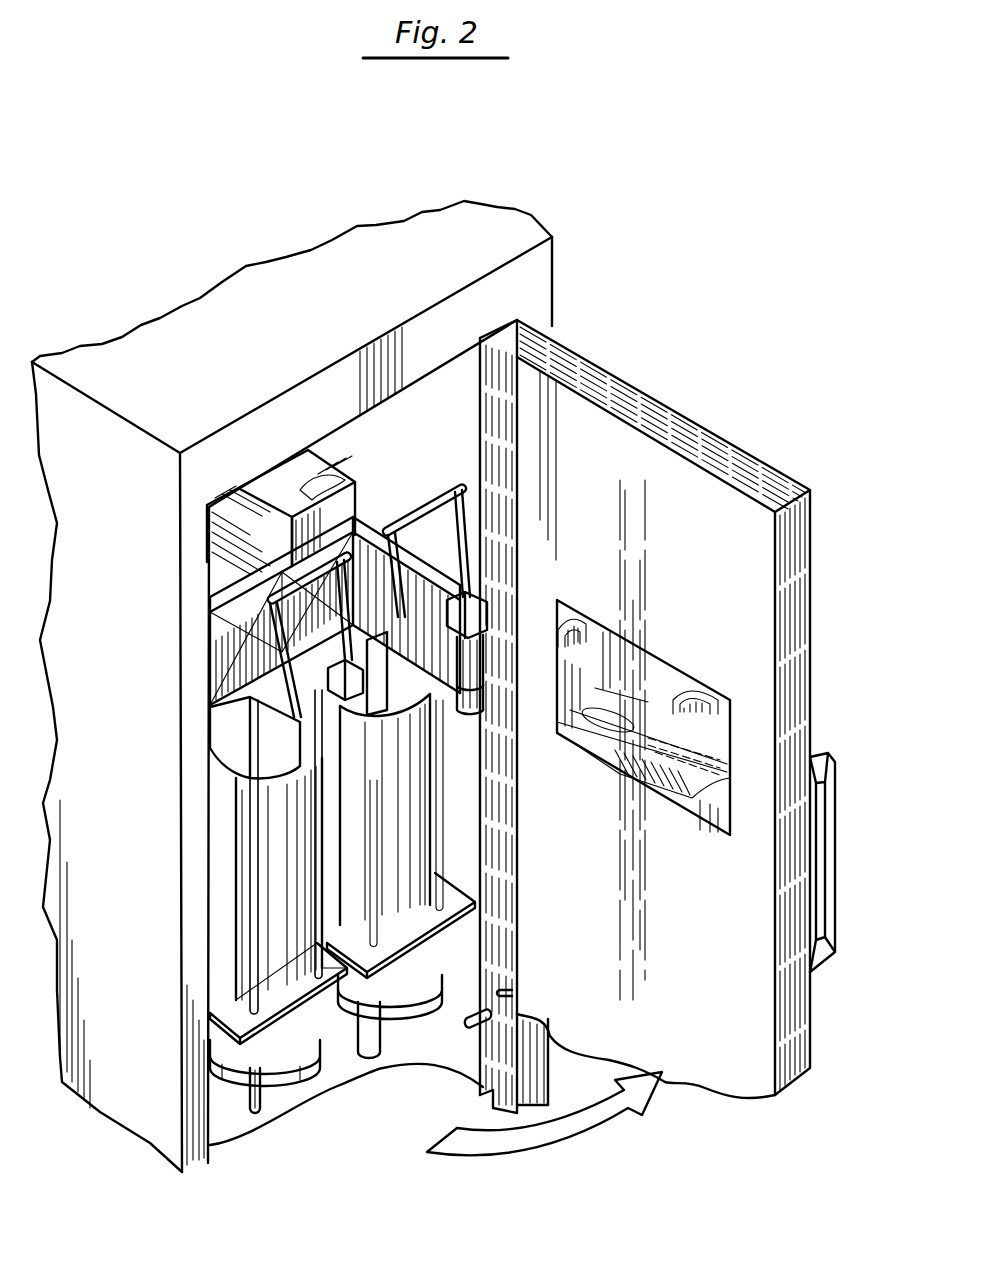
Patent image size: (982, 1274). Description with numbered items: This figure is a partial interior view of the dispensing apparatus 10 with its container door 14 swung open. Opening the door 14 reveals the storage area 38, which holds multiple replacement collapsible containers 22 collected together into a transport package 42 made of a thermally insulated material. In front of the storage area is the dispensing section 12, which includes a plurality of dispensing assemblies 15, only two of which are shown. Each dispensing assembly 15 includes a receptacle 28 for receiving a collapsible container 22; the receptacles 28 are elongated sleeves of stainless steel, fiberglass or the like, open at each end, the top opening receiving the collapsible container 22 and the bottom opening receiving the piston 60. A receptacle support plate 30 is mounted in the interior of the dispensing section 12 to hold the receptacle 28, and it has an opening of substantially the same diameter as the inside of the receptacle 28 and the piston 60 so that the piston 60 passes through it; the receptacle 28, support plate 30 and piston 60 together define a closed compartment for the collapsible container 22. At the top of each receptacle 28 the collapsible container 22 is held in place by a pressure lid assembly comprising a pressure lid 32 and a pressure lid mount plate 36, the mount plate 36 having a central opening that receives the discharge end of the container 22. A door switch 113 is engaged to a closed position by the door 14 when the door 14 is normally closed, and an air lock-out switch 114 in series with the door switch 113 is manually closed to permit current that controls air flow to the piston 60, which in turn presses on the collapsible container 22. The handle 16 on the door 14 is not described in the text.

The dispensing apparatus 10 is at (552, 268).
The dispensing section 12 is at (245, 897).
The container door 14 is at (738, 443).
The dispensing assembly 15 is at (240, 933).
The handle 16 is at (832, 797).
The collapsible container 22 is at (304, 485).
The receptacle 28 is at (237, 857).
The receptacle support plate 30 is at (297, 1020).
The pressure lid 32 is at (227, 708).
The pressure lid mount plate 36 is at (235, 752).
The storage area 38 is at (432, 462).
The transport package 42 is at (234, 517).
The piston 60 is at (283, 1058).
The door switch 113 is at (507, 986).
The air lock-out switch 114 is at (472, 1027).